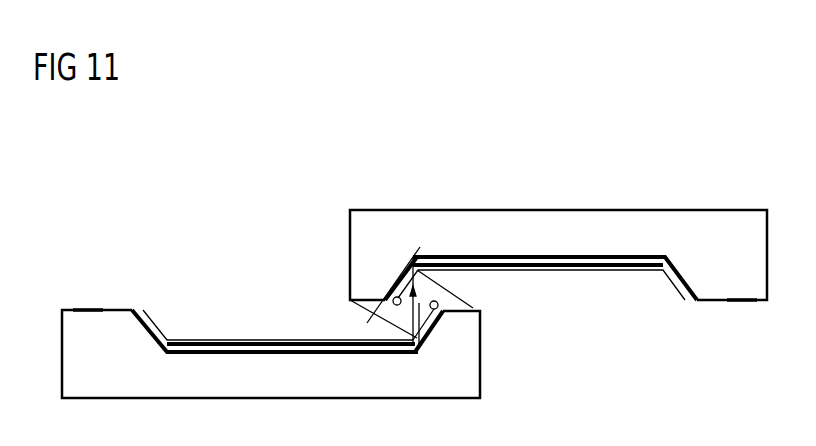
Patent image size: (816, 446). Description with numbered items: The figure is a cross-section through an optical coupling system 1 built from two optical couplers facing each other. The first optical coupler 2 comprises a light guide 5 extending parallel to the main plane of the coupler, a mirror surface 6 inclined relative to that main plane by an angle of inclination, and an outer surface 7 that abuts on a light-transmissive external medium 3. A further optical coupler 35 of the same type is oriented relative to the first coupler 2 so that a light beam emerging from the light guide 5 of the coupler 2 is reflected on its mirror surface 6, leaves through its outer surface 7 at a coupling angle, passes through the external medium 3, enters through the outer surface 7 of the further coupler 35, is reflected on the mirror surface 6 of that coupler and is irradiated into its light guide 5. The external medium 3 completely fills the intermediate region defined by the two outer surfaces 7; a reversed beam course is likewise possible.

The optical coupling system 1 is at (259, 125).
The optical coupler 2 is at (51, 324).
The further optical coupler 35 is at (475, 188).
The light-transmissive external medium 3 is at (359, 329).
The light guide 5 is at (280, 338).
The mirror surface 6 is at (427, 347).
The outer surface 7 is at (446, 312).